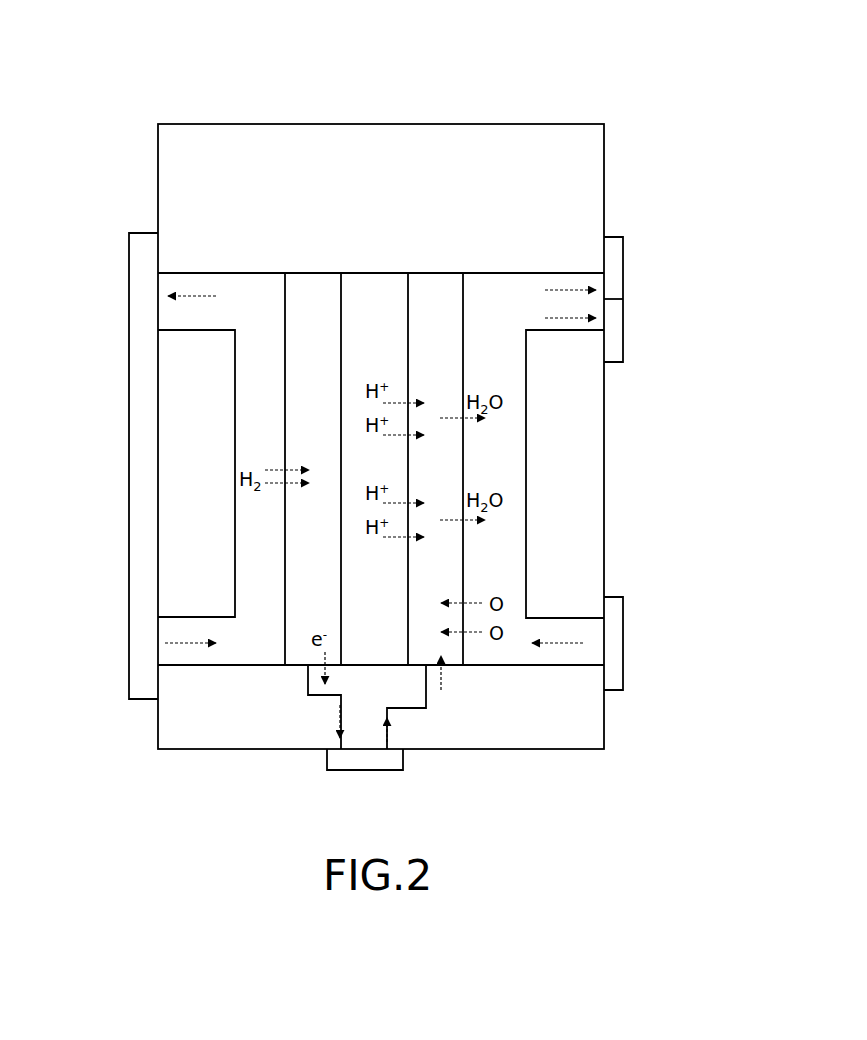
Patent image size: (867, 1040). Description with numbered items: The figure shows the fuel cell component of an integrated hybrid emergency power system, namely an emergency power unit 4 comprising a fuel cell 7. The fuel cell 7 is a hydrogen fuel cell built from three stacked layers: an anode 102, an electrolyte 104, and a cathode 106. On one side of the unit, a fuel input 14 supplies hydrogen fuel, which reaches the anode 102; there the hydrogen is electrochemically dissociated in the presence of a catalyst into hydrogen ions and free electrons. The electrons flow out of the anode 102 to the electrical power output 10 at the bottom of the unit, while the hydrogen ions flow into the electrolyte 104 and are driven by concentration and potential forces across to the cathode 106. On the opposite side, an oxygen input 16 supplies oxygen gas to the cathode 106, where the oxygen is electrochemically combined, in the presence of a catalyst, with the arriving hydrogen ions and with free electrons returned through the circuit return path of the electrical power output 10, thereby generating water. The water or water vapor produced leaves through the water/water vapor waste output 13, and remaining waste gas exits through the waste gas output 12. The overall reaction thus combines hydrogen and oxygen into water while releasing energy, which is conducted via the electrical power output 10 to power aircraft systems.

The emergency power unit 4 is at (492, 70).
The fuel cell 7 is at (418, 124).
The electrical power output 10 is at (372, 770).
The waste gas output 12 is at (618, 237).
The water/water vapor waste output 13 is at (613, 362).
The fuel input 14 is at (129, 515).
The oxygen input 16 is at (623, 667).
The anode 102 is at (313, 469).
The electrolyte 104 is at (374, 469).
The cathode 106 is at (435, 469).